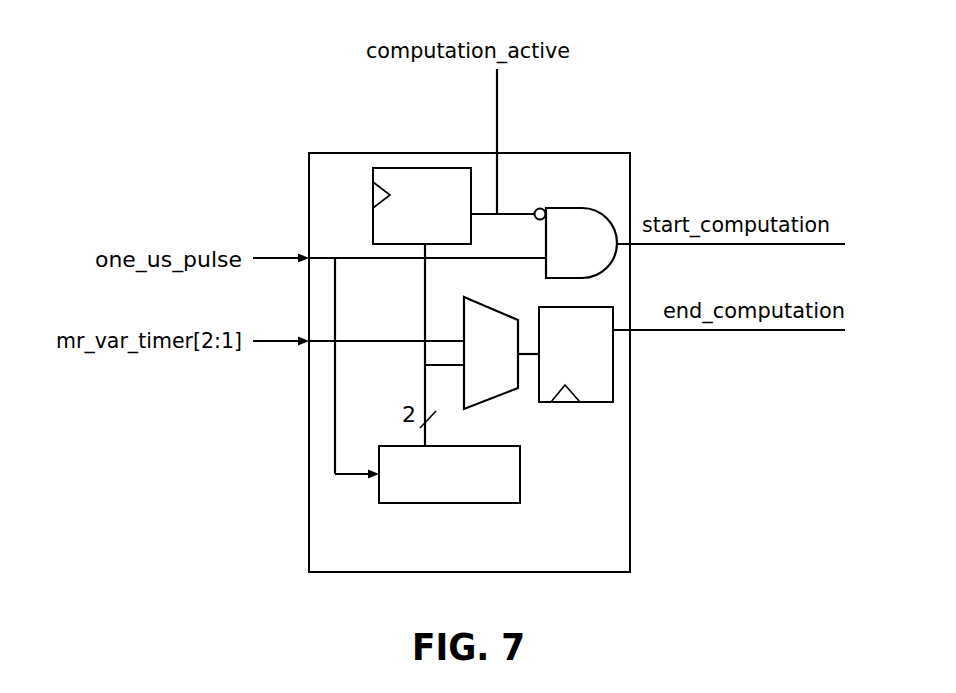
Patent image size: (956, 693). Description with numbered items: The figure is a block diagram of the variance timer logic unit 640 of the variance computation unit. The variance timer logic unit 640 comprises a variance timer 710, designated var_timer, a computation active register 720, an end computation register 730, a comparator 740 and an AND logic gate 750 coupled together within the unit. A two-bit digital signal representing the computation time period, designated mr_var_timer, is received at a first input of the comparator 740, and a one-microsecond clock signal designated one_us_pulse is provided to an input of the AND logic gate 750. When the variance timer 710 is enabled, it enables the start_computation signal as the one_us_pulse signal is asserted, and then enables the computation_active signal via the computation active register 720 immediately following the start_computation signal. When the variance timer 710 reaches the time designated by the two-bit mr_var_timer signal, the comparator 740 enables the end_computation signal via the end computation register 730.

The variance timer logic unit 640 is at (631, 417).
The variance timer 710 is at (522, 474).
The computation active register 720 is at (445, 236).
The end computation register 730 is at (595, 342).
The comparator 740 is at (511, 371).
The AND logic gate 750 is at (597, 259).